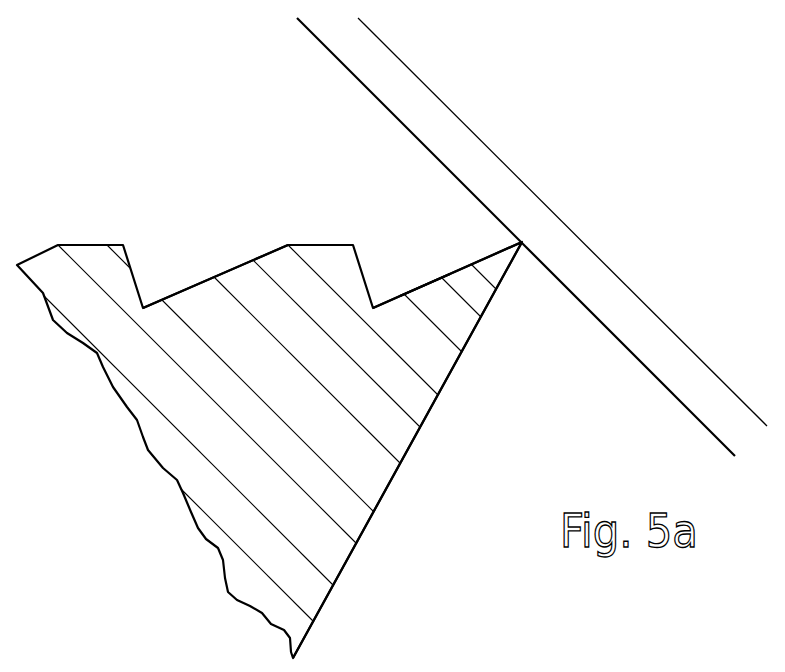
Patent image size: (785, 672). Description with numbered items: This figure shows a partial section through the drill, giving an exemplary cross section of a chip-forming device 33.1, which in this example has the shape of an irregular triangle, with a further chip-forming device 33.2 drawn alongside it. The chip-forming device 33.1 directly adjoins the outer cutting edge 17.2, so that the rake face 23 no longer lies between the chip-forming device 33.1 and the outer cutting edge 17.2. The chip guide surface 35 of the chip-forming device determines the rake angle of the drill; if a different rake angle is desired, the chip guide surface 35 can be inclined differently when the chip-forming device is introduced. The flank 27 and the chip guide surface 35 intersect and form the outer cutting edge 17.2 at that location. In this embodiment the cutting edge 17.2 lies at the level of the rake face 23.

The outer cutting edge 17.2 is at (522, 243).
The rake face 23 is at (97, 245).
The chip-forming device 33.1 is at (468, 256).
The tooth flank 33.2 is at (215, 262).
The chip guide surface 35 is at (425, 283).
The flank 27 is at (340, 573).